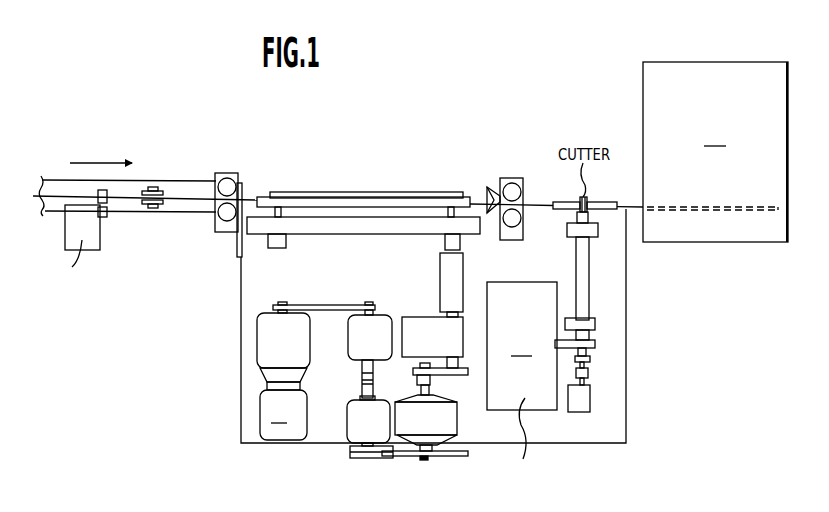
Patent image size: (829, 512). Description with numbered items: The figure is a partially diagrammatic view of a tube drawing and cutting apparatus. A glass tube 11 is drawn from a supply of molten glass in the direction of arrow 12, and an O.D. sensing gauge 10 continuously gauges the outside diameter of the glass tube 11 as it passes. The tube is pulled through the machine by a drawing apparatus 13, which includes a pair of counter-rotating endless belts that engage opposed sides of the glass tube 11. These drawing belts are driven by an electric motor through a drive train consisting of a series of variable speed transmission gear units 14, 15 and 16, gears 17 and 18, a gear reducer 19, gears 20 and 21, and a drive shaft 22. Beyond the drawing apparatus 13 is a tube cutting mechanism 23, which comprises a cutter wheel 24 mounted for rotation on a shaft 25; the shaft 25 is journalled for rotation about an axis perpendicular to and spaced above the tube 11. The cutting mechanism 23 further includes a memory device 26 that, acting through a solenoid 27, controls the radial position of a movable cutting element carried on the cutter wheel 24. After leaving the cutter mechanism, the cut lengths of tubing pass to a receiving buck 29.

The O.D. sensing gauge 10 is at (72, 231).
The glass tube 11 is at (135, 195).
The arrow 12 is at (104, 161).
The drawing apparatus 13 is at (385, 183).
The variable speed transmission gear unit 14 is at (262, 339).
The variable speed transmission gear unit 15 is at (378, 325).
The variable speed transmission gear unit 16 is at (352, 416).
The gear 17 is at (366, 459).
The gear 18 is at (441, 457).
The gear reducer 19 is at (446, 425).
The gear 20 is at (415, 369).
The gear 21 is at (459, 376).
The drive shaft 22 is at (452, 212).
The tube cutting mechanism 23 is at (605, 298).
The cutter wheel 24 is at (597, 201).
The shaft 25 is at (585, 272).
The memory device 26 is at (557, 392).
The solenoid 27 is at (583, 398).
The receiving buck 29 is at (715, 152).